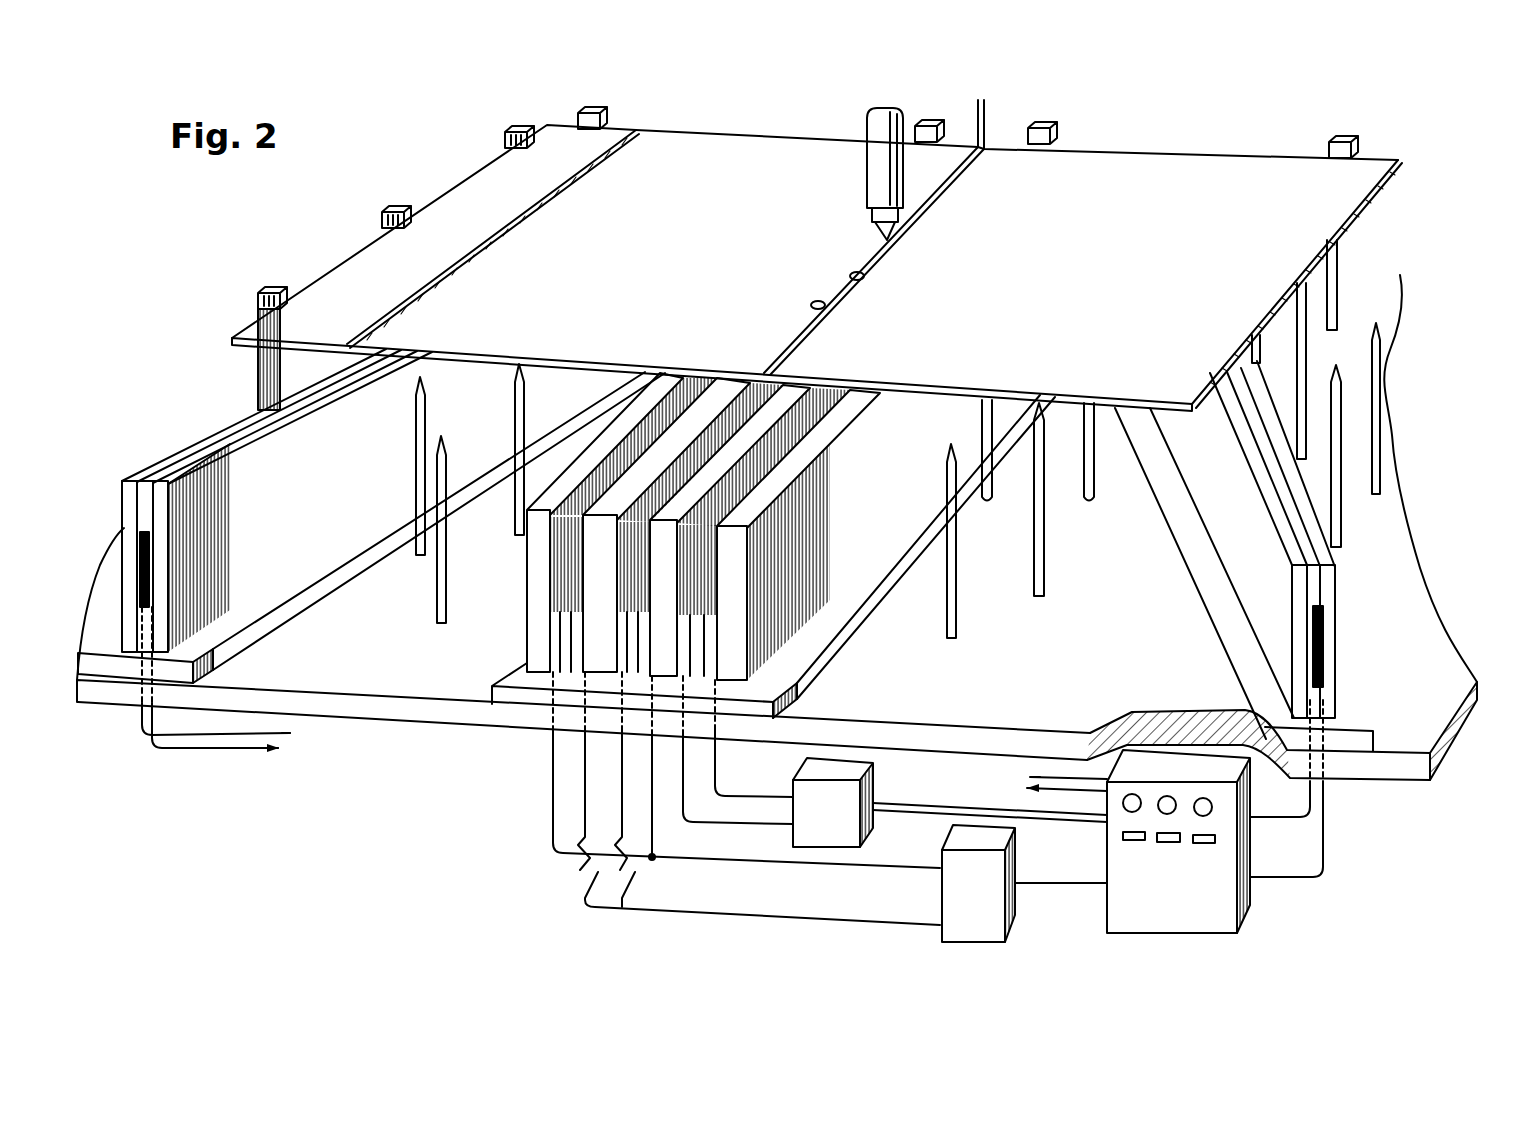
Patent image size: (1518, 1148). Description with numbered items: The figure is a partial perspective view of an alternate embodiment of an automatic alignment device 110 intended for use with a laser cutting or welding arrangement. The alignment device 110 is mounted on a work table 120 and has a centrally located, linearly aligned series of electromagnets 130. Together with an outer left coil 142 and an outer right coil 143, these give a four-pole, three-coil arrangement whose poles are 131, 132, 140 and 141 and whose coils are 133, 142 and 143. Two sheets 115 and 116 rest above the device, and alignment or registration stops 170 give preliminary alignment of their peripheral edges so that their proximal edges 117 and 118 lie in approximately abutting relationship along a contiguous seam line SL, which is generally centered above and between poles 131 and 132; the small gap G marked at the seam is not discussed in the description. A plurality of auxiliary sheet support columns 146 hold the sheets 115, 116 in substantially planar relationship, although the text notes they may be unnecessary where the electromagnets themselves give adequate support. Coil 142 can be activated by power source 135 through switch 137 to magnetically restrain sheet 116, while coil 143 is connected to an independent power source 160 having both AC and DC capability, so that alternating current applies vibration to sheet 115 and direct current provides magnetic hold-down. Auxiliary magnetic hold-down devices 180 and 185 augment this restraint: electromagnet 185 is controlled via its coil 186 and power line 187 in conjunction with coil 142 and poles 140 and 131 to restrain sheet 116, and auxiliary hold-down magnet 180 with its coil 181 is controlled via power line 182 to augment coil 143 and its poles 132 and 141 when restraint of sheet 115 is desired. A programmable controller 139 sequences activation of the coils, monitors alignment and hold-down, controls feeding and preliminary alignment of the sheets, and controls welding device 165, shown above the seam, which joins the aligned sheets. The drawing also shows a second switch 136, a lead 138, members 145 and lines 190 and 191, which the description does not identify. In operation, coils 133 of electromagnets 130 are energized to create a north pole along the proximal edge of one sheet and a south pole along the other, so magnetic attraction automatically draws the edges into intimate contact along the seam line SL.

The alignment device 110 is at (213, 407).
The sheet 115 is at (1099, 288).
The sheet 116 is at (676, 266).
The proximal edge 117 is at (826, 304).
The proximal edge 118 is at (851, 274).
The work table 120 is at (397, 683).
The electromagnets 130 is at (683, 497).
The pole 131 is at (600, 545).
The pole 132 is at (662, 555).
The coils 133 is at (612, 609).
The power source 135 is at (1010, 928).
The switch 136 is at (626, 880).
The switch 137 is at (586, 880).
The lead 138 is at (717, 782).
The programmable controller 139 is at (1187, 906).
The pole 140 is at (537, 538).
The pole 141 is at (737, 557).
The outer left coil 142 is at (545, 608).
The outer right coil 143 is at (720, 619).
The support rail 145 is at (293, 612).
The auxiliary sheet support columns 146 is at (513, 412).
The independent power source 160 is at (845, 826).
The welding device 165 is at (870, 176).
The alignment or registration stops 170 is at (408, 214).
The auxiliary hold-down magnet 180 is at (1342, 606).
The coil 181 is at (1326, 645).
The power line 182 is at (1333, 807).
The auxiliary magnetic hold-down device 185 is at (302, 543).
The coil 186 is at (152, 602).
The power line 187 is at (245, 752).
The signal line 190 is at (921, 807).
The power line 191 is at (1046, 882).
The seam line SL is at (882, 252).
The gap G is at (950, 112).